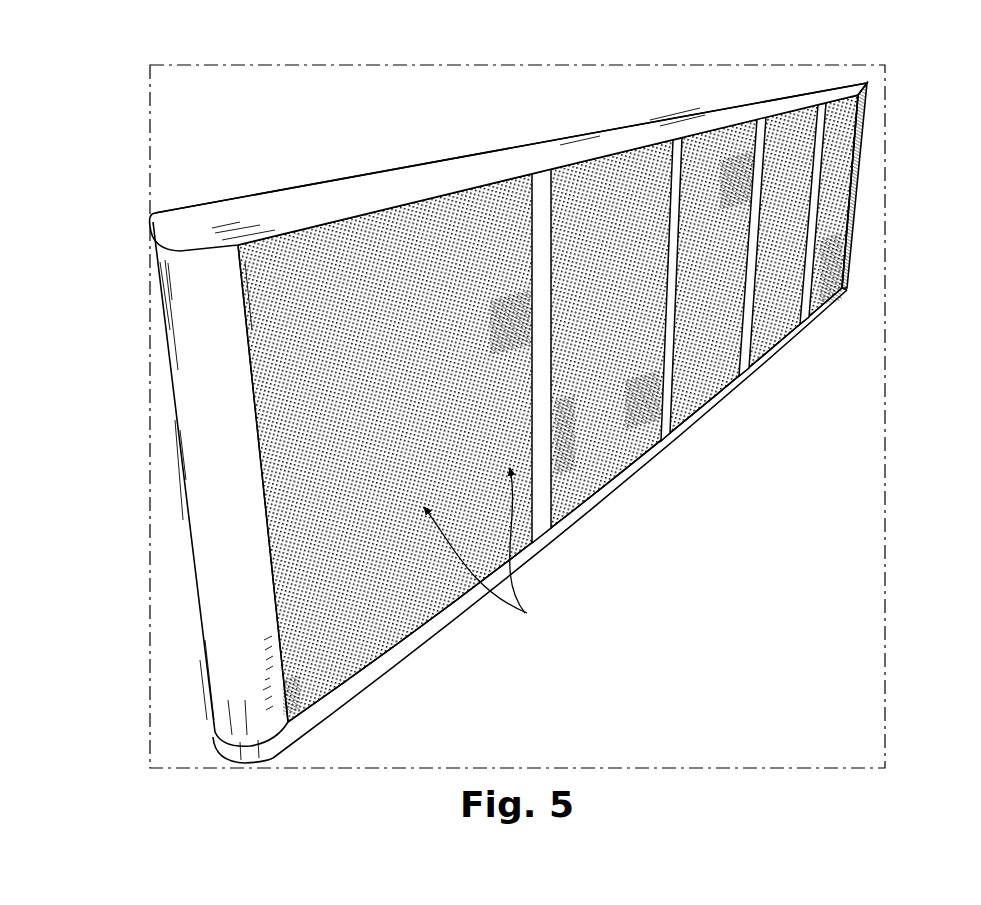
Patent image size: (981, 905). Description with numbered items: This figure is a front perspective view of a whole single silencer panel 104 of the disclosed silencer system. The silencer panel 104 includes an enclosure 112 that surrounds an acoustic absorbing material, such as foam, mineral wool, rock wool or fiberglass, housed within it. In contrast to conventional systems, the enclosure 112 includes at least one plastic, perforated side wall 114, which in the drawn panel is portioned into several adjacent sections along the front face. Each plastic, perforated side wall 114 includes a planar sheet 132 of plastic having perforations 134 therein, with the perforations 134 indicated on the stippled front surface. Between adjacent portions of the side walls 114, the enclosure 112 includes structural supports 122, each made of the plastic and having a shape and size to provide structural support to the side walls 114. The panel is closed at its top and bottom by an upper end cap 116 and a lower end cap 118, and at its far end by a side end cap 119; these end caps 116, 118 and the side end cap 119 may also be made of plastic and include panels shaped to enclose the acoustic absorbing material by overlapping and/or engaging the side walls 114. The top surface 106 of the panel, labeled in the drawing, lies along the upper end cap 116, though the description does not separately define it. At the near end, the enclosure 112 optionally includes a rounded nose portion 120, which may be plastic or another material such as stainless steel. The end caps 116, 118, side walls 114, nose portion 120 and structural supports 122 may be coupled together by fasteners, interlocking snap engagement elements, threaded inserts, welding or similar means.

The silencer panel 104 is at (511, 393).
The top surface 106 is at (432, 188).
The enclosure 112 is at (202, 463).
The perforated side wall 114 is at (710, 358).
The upper end cap 116 is at (673, 118).
The lower end cap 118 is at (563, 522).
The side end cap 119 is at (860, 172).
The nose portion 120 is at (222, 552).
The structural support 122 is at (543, 320).
The planar sheet 132 is at (470, 264).
The perforations 134 is at (498, 551).